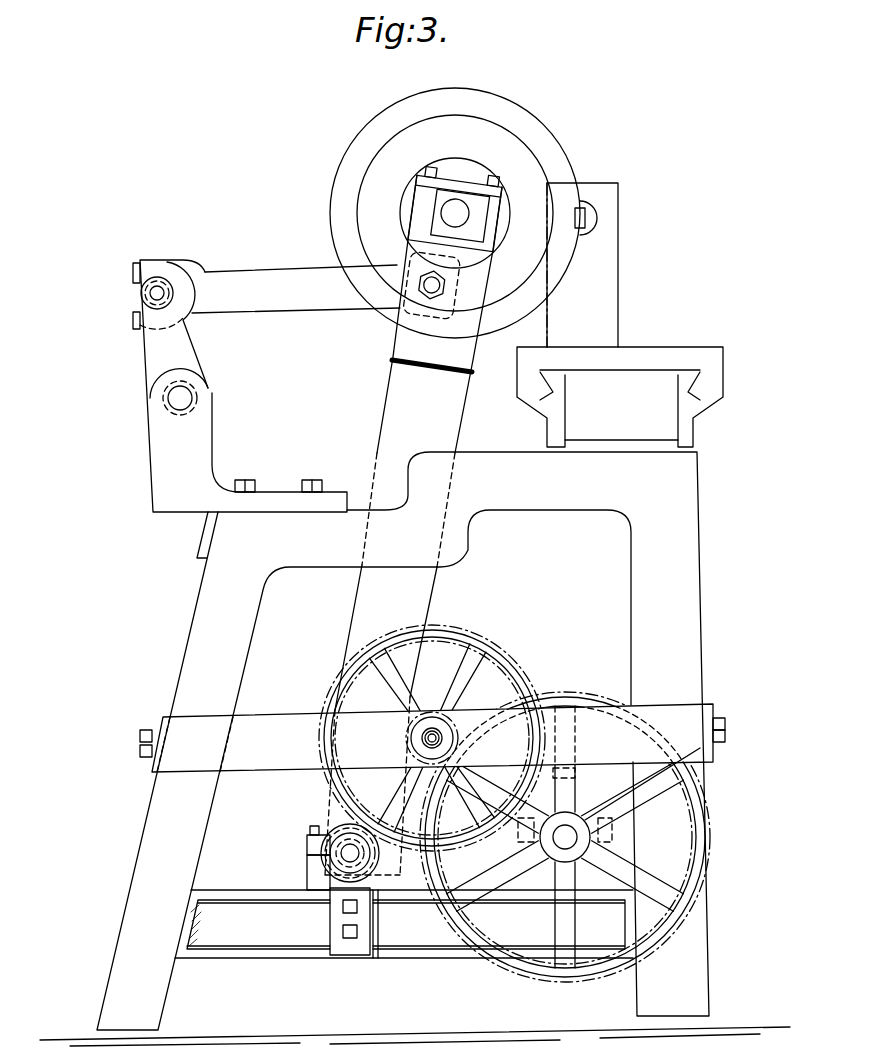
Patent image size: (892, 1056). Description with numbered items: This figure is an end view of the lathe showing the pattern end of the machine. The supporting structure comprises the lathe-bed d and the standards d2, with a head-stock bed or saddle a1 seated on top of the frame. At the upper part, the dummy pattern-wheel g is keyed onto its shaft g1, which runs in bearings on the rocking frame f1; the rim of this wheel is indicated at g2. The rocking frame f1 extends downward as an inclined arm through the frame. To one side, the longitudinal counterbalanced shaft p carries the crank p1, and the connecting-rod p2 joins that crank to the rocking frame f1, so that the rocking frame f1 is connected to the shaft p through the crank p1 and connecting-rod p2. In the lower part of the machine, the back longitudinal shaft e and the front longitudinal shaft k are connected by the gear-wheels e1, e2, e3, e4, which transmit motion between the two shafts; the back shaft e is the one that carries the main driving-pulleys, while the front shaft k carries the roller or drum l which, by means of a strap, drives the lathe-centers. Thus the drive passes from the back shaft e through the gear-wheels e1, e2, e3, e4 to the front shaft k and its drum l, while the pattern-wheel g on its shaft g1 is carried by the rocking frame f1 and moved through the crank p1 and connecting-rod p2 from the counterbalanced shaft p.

The dummy pattern-wheel g is at (455, 210).
The shaft g1 is at (480, 205).
The pulley rim g2 is at (556, 273).
The connecting-rod p2 is at (296, 289).
The crank p1 is at (185, 347).
The longitudinal counterbalanced shaft p is at (183, 398).
The head-stock bed or saddle a1 is at (648, 346).
The lathe-bed d is at (560, 412).
The standards d2 is at (415, 614).
The rocking frame f1 is at (413, 525).
The gear-wheel e2 is at (511, 653).
The gear-wheel e3 is at (573, 700).
The gear-wheel e4 is at (411, 738).
The gear-wheel e1 is at (343, 828).
The back longitudinal shaft e is at (347, 853).
The roller or drum l is at (626, 784).
The front longitudinal shaft k is at (565, 837).